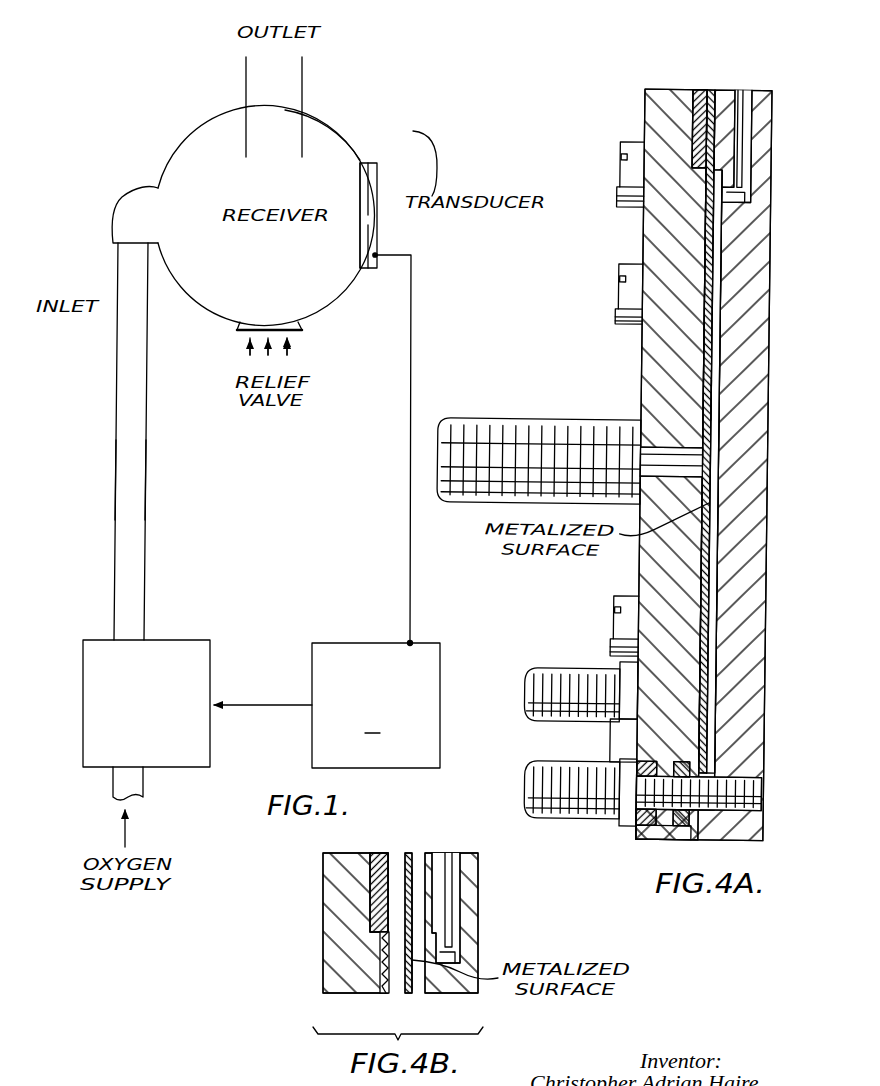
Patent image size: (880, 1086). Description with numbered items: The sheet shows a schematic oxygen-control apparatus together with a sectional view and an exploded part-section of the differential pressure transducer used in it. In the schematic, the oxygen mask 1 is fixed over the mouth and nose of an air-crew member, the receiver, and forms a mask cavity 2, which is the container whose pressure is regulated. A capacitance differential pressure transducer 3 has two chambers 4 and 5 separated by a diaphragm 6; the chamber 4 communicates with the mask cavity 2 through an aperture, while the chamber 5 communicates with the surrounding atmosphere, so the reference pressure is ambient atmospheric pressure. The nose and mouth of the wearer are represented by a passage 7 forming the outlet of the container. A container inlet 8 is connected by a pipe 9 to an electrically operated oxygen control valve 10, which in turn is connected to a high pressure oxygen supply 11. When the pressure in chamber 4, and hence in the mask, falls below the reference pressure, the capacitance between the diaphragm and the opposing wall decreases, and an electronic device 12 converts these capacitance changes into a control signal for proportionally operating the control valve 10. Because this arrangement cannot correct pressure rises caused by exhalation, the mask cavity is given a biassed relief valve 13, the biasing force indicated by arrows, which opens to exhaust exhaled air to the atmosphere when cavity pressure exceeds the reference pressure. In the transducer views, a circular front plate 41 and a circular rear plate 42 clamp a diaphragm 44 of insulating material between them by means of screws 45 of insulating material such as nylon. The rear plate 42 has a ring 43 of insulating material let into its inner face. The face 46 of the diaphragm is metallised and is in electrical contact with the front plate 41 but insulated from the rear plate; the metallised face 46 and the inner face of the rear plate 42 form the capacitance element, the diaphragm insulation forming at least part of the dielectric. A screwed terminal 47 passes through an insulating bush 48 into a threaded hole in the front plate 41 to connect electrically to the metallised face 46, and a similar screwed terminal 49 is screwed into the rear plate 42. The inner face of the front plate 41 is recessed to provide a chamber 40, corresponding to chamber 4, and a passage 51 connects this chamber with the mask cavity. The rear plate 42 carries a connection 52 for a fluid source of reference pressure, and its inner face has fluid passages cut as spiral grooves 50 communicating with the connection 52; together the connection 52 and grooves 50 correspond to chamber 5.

In FIG. 1, the oxygen mask 1 is at (348, 131).
In FIG. 1, the mask cavity 2 is at (317, 140).
In FIG. 1, the capacitance differential pressure transducer 3 is at (384, 157).
In FIG. 1, the chamber 4 is at (360, 247).
In FIG. 1, the chamber 5 is at (376, 233).
In FIG. 1, the diaphragm 6 is at (373, 181).
In FIG. 1, the passage 7 is at (288, 77).
In FIG. 1, the container inlet 8 is at (73, 293).
In FIG. 1, the pipe 9 is at (143, 451).
In FIG. 1, the oxygen control valve 10 is at (178, 655).
In FIG. 1, the high pressure oxygen supply 11 is at (113, 786).
In FIG. 1, the electronic device 12 is at (357, 650).
In FIG. 1, the biassed relief valve 13 is at (261, 367).
In FIG. 4A, the chamber 40 is at (716, 396).
In FIG. 4A, the circular front plate 41 is at (755, 278).
In FIG. 4B, the circular front plate 41 is at (470, 918).
In FIG. 4A, the circular rear plate 42 is at (656, 360).
In FIG. 4B, the circular rear plate 42 is at (333, 888).
In FIG. 4A, the ring 43 is at (702, 90).
In FIG. 4B, the ring 43 is at (375, 866).
In FIG. 4A, the diaphragm 44 is at (712, 90).
In FIG. 4B, the diaphragm 44 is at (409, 864).
In FIG. 4A, the screws 45 is at (621, 268).
In FIG. 4A, the metallised face 46 is at (718, 333).
In FIG. 4B, the metallised face 46 is at (413, 980).
In FIG. 4A, the screwed terminal 47 is at (549, 772).
In FIG. 4A, the insulating bush 48 is at (652, 835).
In FIG. 4A, the screwed terminal 49 is at (551, 676).
In FIG. 4B, the grooves 50 is at (388, 980).
In FIG. 4A, the passage 51 is at (745, 100).
In FIG. 4B, the passage 51 is at (452, 866).
In FIG. 4A, the connection 52 is at (512, 421).